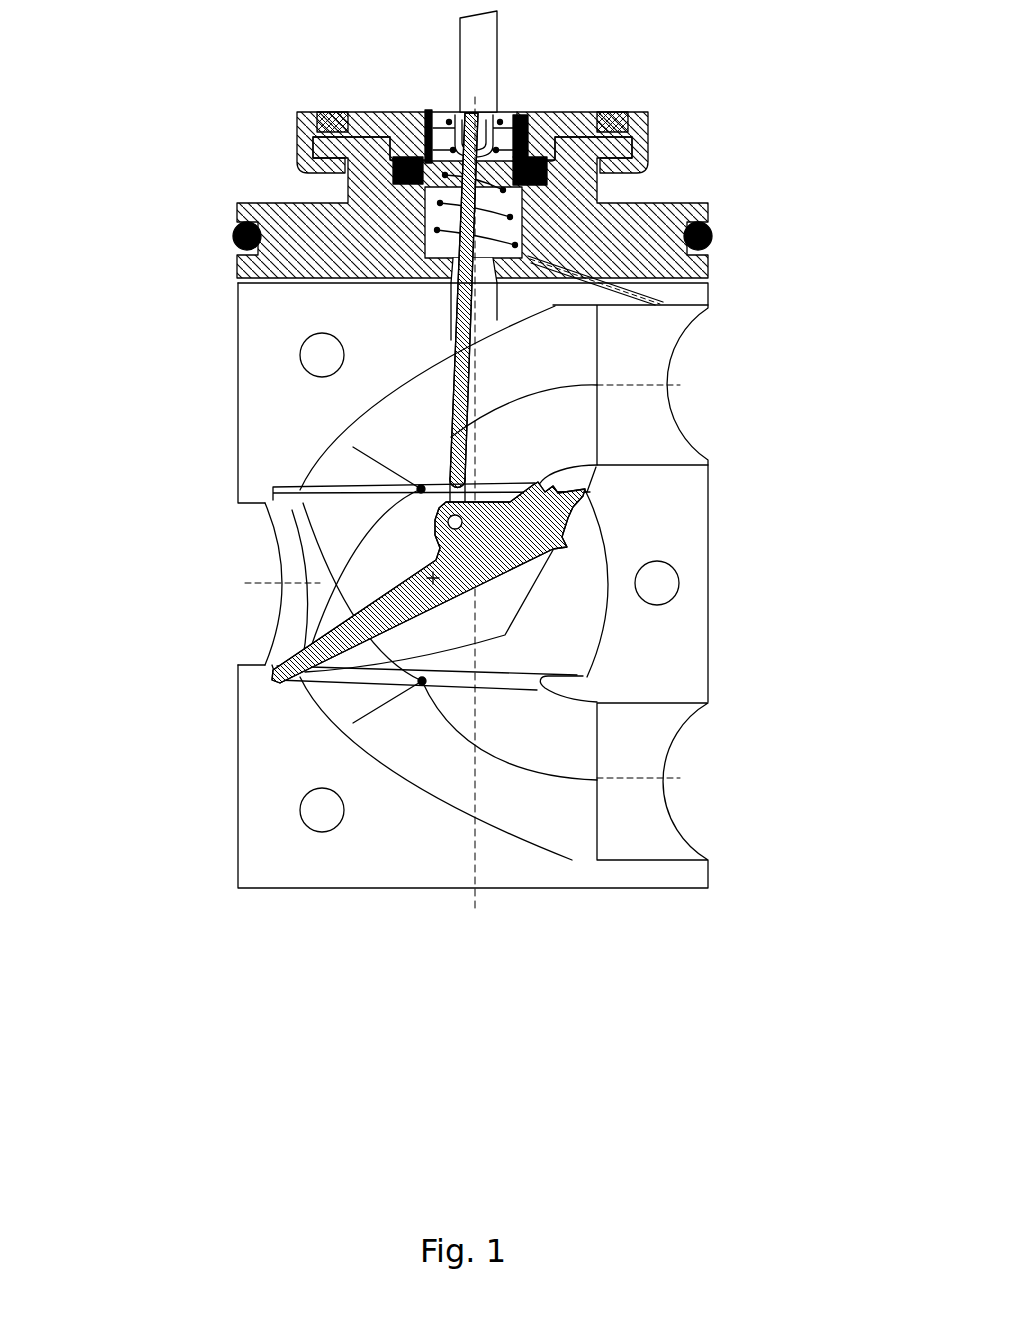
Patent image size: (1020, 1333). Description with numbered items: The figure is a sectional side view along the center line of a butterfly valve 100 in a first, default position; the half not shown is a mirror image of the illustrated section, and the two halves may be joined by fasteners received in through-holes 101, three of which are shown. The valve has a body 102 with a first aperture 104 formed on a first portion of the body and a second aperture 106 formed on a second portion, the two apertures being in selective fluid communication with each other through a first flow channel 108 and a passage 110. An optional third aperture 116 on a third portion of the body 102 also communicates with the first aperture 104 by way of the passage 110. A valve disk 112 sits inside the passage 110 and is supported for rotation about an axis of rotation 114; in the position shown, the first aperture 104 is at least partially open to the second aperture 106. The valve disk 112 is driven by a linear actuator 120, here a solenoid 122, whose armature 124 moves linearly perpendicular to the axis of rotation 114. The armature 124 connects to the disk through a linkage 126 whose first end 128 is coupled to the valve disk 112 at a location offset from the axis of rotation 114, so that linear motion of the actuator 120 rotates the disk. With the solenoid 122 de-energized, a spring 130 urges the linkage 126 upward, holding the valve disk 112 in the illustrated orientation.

The butterfly valve 100 is at (427, 490).
The through-holes 101 is at (300, 352).
The body 102 is at (238, 852).
The first aperture 104 is at (235, 631).
The second aperture 106 is at (712, 352).
The first flow channel 108 is at (558, 335).
The passage 110 is at (413, 550).
The valve disk 112 is at (300, 677).
The axis of rotation 114 is at (305, 578).
The third aperture 116 is at (690, 824).
The actuator 120 is at (683, 118).
The solenoid 122 is at (296, 125).
The armature 124 is at (504, 47).
The linkage 126 is at (453, 397).
The first end 128 is at (593, 485).
The spring 130 is at (423, 200).